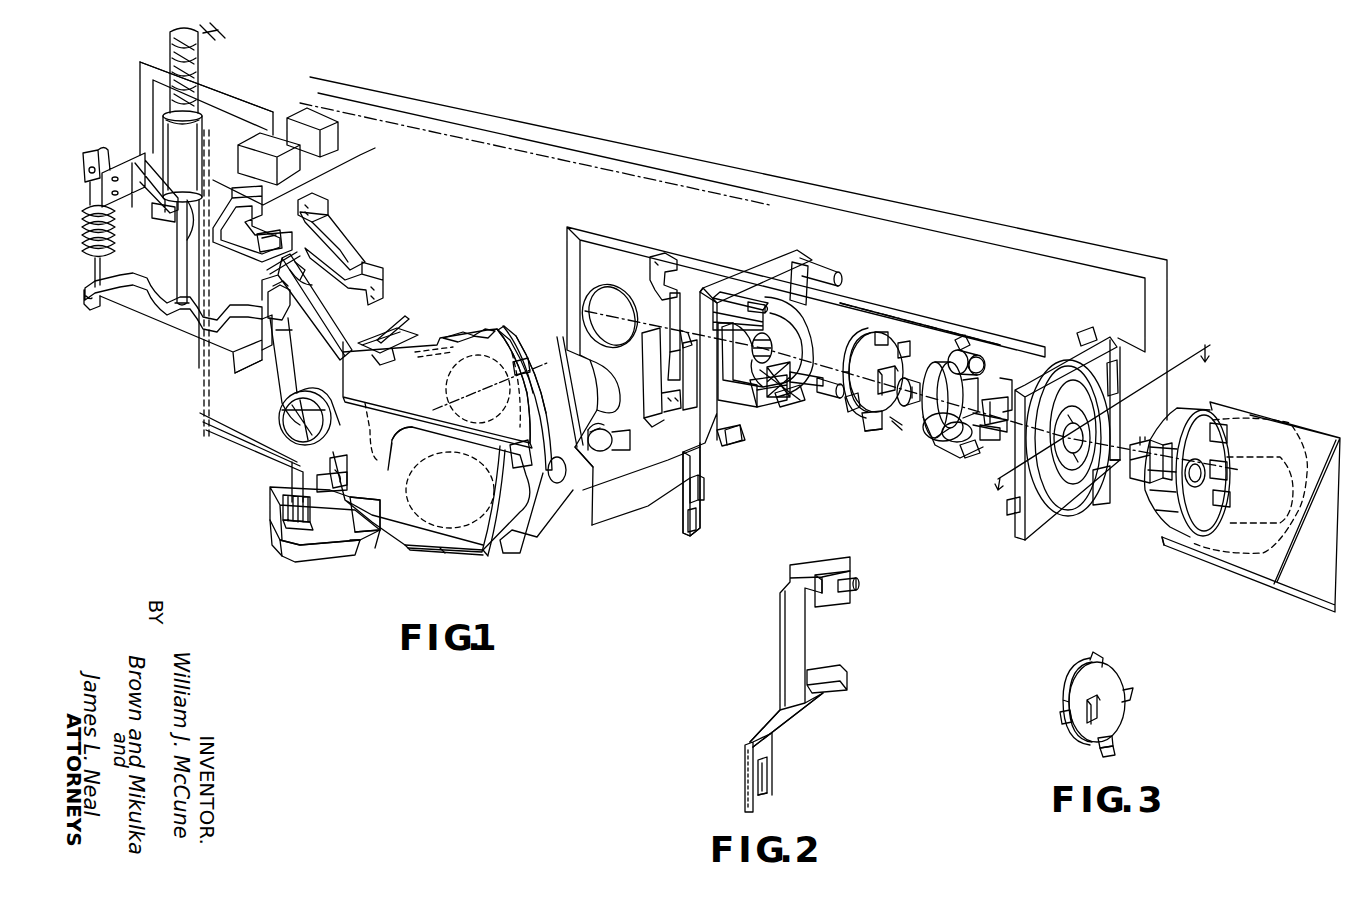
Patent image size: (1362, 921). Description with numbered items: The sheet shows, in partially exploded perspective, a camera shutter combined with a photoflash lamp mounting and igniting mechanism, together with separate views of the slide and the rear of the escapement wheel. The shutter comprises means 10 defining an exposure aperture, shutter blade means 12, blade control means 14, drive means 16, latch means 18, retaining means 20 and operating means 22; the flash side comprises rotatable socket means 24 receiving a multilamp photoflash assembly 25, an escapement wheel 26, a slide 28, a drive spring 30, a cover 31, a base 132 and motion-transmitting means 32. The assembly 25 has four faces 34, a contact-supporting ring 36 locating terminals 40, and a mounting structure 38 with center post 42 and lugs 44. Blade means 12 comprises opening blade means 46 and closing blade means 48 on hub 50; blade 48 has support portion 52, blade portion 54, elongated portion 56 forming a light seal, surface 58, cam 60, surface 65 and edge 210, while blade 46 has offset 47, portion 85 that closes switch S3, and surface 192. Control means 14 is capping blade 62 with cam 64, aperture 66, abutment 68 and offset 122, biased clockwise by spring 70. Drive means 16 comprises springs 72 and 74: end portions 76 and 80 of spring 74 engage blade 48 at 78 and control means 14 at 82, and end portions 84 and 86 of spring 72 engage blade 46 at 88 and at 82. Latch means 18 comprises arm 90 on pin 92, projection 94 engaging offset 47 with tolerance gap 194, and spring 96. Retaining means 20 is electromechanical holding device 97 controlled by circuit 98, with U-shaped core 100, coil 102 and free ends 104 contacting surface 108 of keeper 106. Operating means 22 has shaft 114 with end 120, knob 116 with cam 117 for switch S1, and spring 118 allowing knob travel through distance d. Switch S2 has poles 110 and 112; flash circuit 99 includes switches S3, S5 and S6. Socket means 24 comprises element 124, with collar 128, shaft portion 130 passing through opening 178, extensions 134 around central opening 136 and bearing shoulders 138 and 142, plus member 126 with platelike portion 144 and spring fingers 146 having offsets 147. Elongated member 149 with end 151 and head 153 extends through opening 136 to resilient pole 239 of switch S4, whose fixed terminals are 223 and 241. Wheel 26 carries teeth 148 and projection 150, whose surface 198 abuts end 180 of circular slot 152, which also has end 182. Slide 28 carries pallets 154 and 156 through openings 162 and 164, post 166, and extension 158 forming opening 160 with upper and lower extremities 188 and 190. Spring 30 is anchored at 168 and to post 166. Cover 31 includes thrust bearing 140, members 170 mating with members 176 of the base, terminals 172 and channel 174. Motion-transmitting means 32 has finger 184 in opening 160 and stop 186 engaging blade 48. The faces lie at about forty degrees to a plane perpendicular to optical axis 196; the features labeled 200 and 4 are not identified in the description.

In FIG. 1, the means defining an exposure aperture 10 is at (600, 245).
In FIG. 1, the shutter blade means 12 is at (287, 460).
In FIG. 1, the blade control means 14 is at (189, 356).
In FIG. 1, the drive means 16 is at (294, 392).
In FIG. 1, the latch means 18 is at (526, 339).
In FIG. 1, the retaining means 20 is at (258, 517).
In FIG. 1, the operating means 22 is at (128, 99).
In FIG. 1, the rotatable socket means 24 is at (1003, 333).
In FIG. 1, the multilamp photoflash assembly 25 is at (1176, 569).
In FIG. 1, the escapement wheel 26 is at (886, 328).
In FIG. 3, the escapement wheel 26 is at (1072, 677).
In FIG. 1, the slide 28 is at (712, 472).
In FIG. 2, the slide 28 is at (764, 598).
In FIG. 1, the drive spring 30 is at (968, 470).
In FIG. 1, the cover 31 is at (1032, 543).
In FIG. 1, the motion-transmitting means 32 is at (587, 505).
In FIG. 1, the faces 34 is at (1329, 442).
In FIG. 1, the contact-supporting ring 36 is at (1180, 417).
In FIG. 1, the mounting structure 38 is at (1133, 508).
In FIG. 1, the terminals 40 is at (1222, 478).
In FIG. 1, the center post 42 is at (1138, 443).
In FIG. 1, the lugs 44 is at (1145, 440).
In FIG. 1, the opening blade means 46 is at (396, 397).
In FIG. 1, the offset 47 is at (532, 367).
In FIG. 1, the closing blade means 48 is at (372, 464).
In FIG. 1, the hub 50 is at (290, 428).
In FIG. 1, the support portion 52 is at (347, 485).
In FIG. 1, the blade portion 54 is at (443, 557).
In FIG. 1, the elongated portion 56 is at (445, 435).
In FIG. 1, the surface 58 is at (488, 553).
In FIG. 1, the cam 60 is at (551, 476).
In FIG. 1, the capping blade 62 is at (476, 586).
In FIG. 1, the cam 64 is at (513, 462).
In FIG. 1, the surface 65 is at (525, 482).
In FIG. 1, the aperture 66 is at (452, 551).
In FIG. 1, the abutment 68 is at (455, 332).
In FIG. 1, the spring 70 is at (103, 262).
In FIG. 1, the drive spring 72 is at (310, 292).
In FIG. 1, the drive spring 74 is at (281, 350).
In FIG. 1, the end portion 76 is at (275, 290).
In FIG. 1, the engagement point 78 is at (270, 340).
In FIG. 1, the end portion 80 is at (389, 362).
In FIG. 1, the engagement point 82 is at (405, 330).
In FIG. 1, the end portion 84 is at (268, 270).
In FIG. 1, the portion 85 is at (279, 244).
In FIG. 1, the end portion 86 is at (395, 318).
In FIG. 1, the engagement point 88 is at (309, 278).
In FIG. 1, the arm 90 is at (563, 390).
In FIG. 1, the pin 92 is at (615, 436).
In FIG. 1, the projection 94 is at (533, 345).
In FIG. 1, the spring 96 is at (596, 428).
In FIG. 1, the releasable electromechanical holding device 97 is at (272, 552).
In FIG. 1, the electrical circuit means 98 is at (282, 145).
In FIG. 1, the flash circuit 99 is at (330, 118).
In FIG. 1, the U-shaped core 100 is at (320, 556).
In FIG. 1, the coil 102 is at (283, 498).
In FIG. 1, the free ends 104 is at (283, 518).
In FIG. 1, the keeper 106 is at (370, 545).
In FIG. 1, the surface 108 is at (365, 515).
In FIG. 1, the pole 110 is at (320, 258).
In FIG. 1, the pole 112 is at (322, 235).
In FIG. 1, the shaft 114 is at (202, 122).
In FIG. 1, the knob 116 is at (190, 134).
In FIG. 1, the cam 117 is at (186, 240).
In FIG. 1, the spring 118 is at (190, 76).
In FIG. 1, the end 120 is at (190, 312).
In FIG. 1, the offset 122 is at (165, 307).
In FIG. 1, the element 124 is at (1000, 437).
In FIG. 1, the member 126 is at (949, 348).
In FIG. 1, the collar 128 is at (906, 421).
In FIG. 1, the shaft portion 130 is at (874, 393).
In FIG. 1, the base 132 is at (775, 258).
In FIG. 1, the extensions 134 is at (1000, 395).
In FIG. 1, the central opening 136 is at (1012, 395).
In FIG. 1, the bearing shoulders 138 is at (982, 365).
In FIG. 1, the thrust bearing 140 is at (1068, 438).
In FIG. 1, the bearing shoulders 142 is at (933, 439).
In FIG. 1, the platelike portion 144 is at (958, 355).
In FIG. 1, the spring fingers 146 is at (995, 449).
In FIG. 1, the offsets 147 is at (951, 444).
In FIG. 1, the teeth 148 is at (870, 332).
In FIG. 3, the teeth 148 is at (1105, 663).
In FIG. 1, the elongated member 149 is at (1070, 438).
In FIG. 1, the projection 150 is at (870, 432).
In FIG. 3, the projection 150 is at (1112, 752).
In FIG. 1, the end 151 is at (670, 300).
In FIG. 1, the circular slot 152 is at (775, 352).
In FIG. 1, the enlarged head 153 is at (1075, 410).
In FIG. 1, the first pallet 154 is at (748, 440).
In FIG. 2, the first pallet 154 is at (845, 690).
In FIG. 1, the second pallet 156 is at (722, 297).
In FIG. 2, the second pallet 156 is at (835, 600).
In FIG. 2, the extension 158 is at (778, 735).
In FIG. 1, the opening 160 is at (700, 500).
In FIG. 2, the opening 160 is at (767, 775).
In FIG. 1, the opening 162 is at (756, 397).
In FIG. 1, the opening 164 is at (733, 366).
In FIG. 1, the post 166 is at (755, 302).
In FIG. 2, the post 166 is at (858, 580).
In FIG. 1, the spring mounting point 168 is at (886, 369).
In FIG. 1, the members 170 is at (1030, 388).
In FIG. 1, the terminals 172 is at (1118, 400).
In FIG. 1, the channel 174 is at (1060, 500).
In FIG. 1, the members 176 is at (828, 252).
In FIG. 1, the circular opening 178 is at (800, 340).
In FIG. 1, the slot end 180 is at (790, 395).
In FIG. 1, the slot end 182 is at (800, 410).
In FIG. 1, the finger 184 is at (640, 506).
In FIG. 1, the stop 186 is at (540, 538).
In FIG. 1, the upper extremity 188 is at (690, 452).
In FIG. 2, the upper extremity 188 is at (748, 748).
In FIG. 1, the lower extremity 190 is at (694, 525).
In FIG. 2, the lower extremity 190 is at (770, 795).
In FIG. 1, the surface 192 is at (478, 325).
In FIG. 1, the tolerance gap 194 is at (505, 370).
In FIG. 1, the optical axis 196 is at (612, 386).
In FIG. 1, the surface 198 is at (879, 432).
In FIG. 3, the surface 198 is at (1096, 747).
In FIG. 1, the tab 200 is at (855, 412).
In FIG. 3, the tab 200 is at (1114, 742).
In FIG. 1, the edge 210 is at (515, 400).
In FIG. 1, the fixed terminal 223 is at (666, 418).
In FIG. 1, the resilient pole 239 is at (655, 280).
In FIG. 1, the fixed terminal 241 is at (666, 345).
In FIG. 1, the section line 4 is at (1106, 425).
In FIG. 1, the distance d is at (217, 41).
In FIG. 1, the switch S1 is at (130, 170).
In FIG. 1, the switch S2 is at (328, 216).
In FIG. 1, the flash ignition switch S3 is at (252, 224).
In FIG. 1, the switch S4 is at (649, 373).
In FIG. 1, the switch S5 is at (810, 430).
In FIG. 1, the safety switch S6 is at (307, 481).